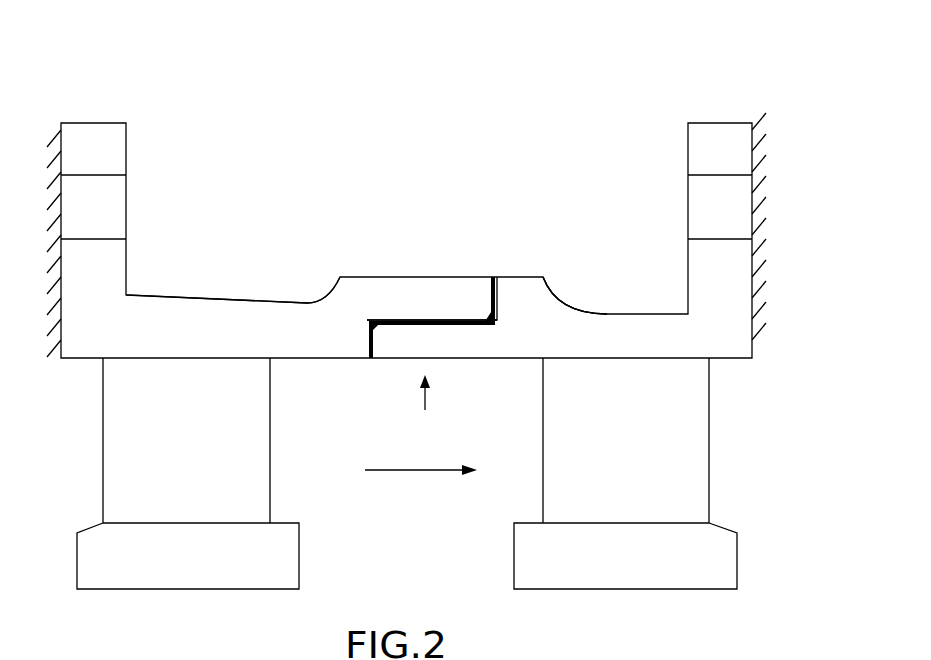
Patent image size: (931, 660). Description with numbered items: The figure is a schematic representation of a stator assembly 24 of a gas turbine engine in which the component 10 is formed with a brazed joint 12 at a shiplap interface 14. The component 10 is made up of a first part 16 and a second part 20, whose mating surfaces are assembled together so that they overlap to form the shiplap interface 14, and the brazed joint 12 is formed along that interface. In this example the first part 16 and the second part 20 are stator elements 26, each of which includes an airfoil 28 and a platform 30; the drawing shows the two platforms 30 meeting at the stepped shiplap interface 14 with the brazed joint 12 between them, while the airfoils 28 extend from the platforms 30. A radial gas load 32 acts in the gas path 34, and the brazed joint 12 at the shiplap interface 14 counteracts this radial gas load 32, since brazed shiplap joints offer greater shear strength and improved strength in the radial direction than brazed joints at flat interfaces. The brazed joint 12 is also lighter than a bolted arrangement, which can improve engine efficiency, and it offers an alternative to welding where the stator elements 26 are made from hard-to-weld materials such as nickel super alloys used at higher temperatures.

The component 10 is at (467, 78).
The brazed joint 12 is at (452, 320).
The shiplap interface 14 is at (409, 320).
The first part 16 is at (182, 312).
The second part 20 is at (558, 302).
The stator assembly 24 is at (487, 112).
The stator elements 26 is at (93, 404).
The airfoil 28 is at (250, 458).
The platform 30 is at (253, 312).
The radial gas load 32 is at (425, 407).
The gas path 34 is at (421, 470).